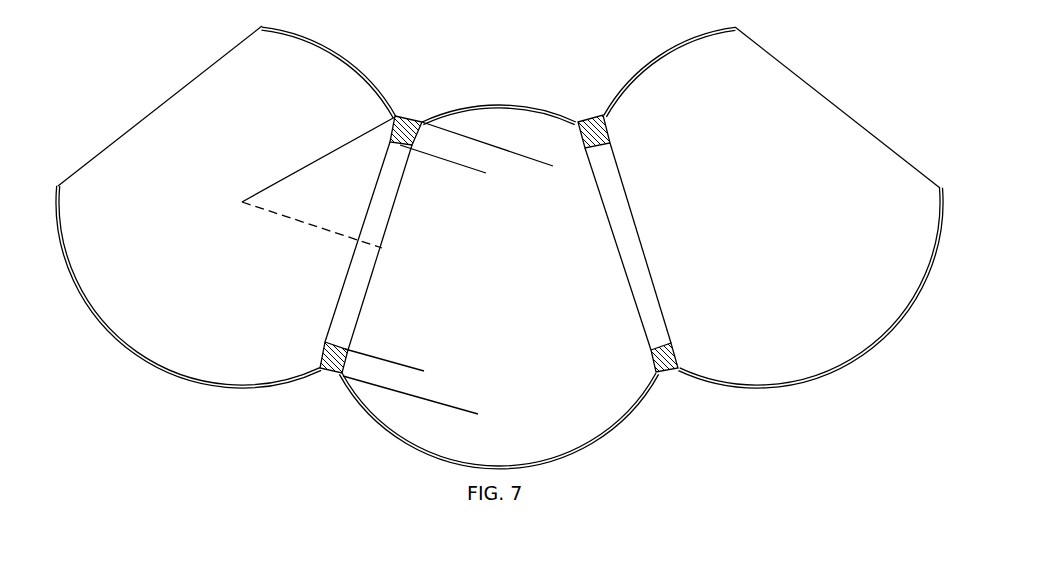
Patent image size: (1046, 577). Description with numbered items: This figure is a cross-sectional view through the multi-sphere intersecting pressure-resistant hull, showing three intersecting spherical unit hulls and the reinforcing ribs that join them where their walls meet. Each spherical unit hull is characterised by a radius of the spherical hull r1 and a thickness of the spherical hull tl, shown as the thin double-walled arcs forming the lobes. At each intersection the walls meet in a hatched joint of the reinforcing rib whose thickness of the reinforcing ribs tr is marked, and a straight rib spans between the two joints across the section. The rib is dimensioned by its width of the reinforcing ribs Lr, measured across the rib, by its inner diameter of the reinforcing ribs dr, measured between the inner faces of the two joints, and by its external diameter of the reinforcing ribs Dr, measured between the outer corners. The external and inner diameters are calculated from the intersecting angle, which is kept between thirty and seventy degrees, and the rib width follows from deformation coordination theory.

The thickness of the spherical hull tl is at (311, 53).
The thickness of the reinforcing ribs tr is at (421, 149).
The width of the reinforcing ribs Lr is at (343, 238).
The inner diameter of the reinforcing ribs dr is at (483, 172).
The external diameter of the reinforcing ribs Dr is at (550, 165).
The radius of the spherical hull r1 is at (655, 65).